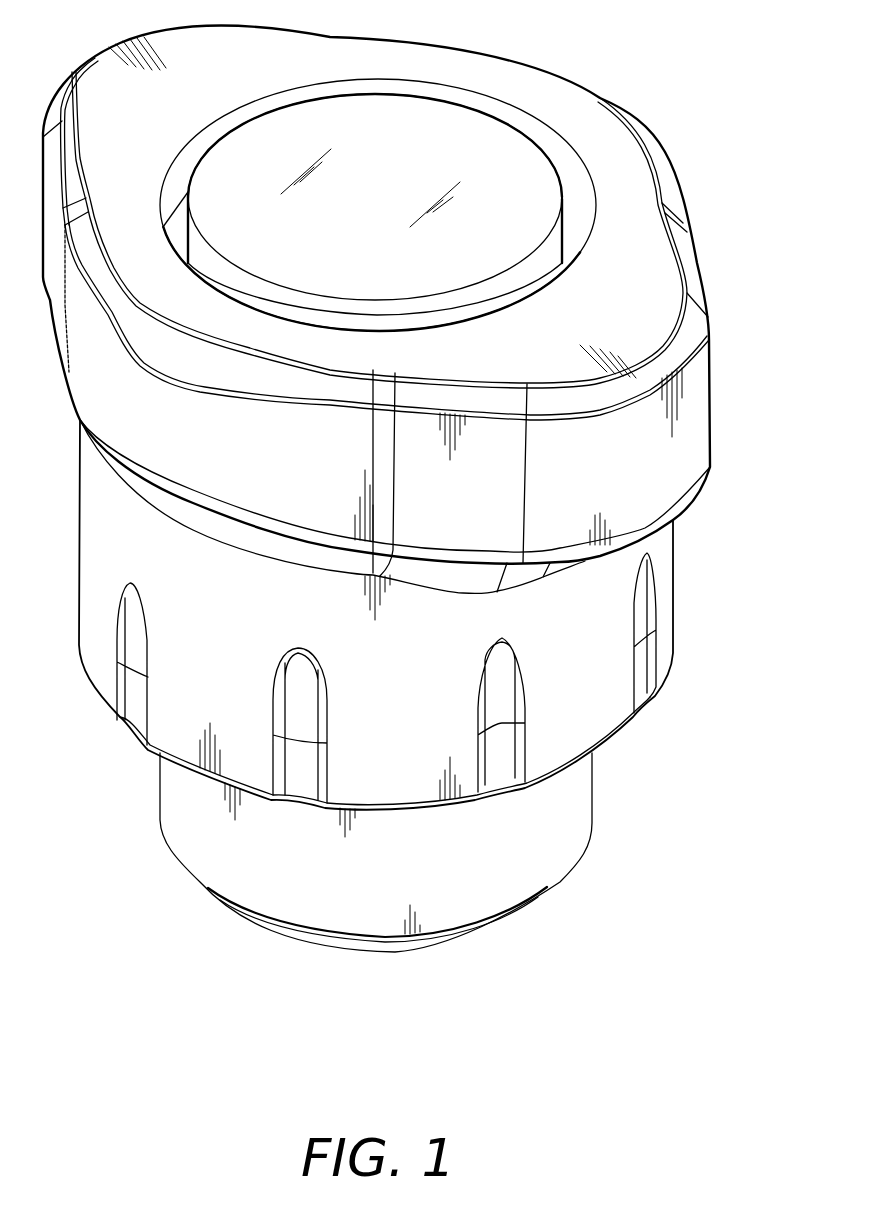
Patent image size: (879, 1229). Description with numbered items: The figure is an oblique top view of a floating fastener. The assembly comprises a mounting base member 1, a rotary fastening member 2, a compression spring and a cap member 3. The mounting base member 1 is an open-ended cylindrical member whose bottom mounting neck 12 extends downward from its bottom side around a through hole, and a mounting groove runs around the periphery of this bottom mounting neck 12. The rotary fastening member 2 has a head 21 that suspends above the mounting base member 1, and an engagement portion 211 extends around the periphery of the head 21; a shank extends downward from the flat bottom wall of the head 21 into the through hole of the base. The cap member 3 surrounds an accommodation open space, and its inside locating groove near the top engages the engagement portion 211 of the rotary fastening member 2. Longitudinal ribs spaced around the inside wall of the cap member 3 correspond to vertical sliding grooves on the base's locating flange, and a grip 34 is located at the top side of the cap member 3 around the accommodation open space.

The mounting base member 1 is at (577, 791).
The bottom mounting neck 12 is at (480, 926).
The rotary fastening member 2 is at (445, 74).
The head 21 is at (360, 123).
The engagement portion 211 is at (577, 223).
The cap member 3 is at (95, 531).
The grip 34 is at (698, 438).